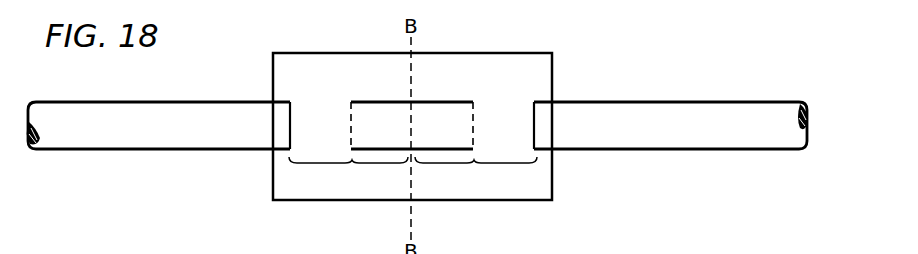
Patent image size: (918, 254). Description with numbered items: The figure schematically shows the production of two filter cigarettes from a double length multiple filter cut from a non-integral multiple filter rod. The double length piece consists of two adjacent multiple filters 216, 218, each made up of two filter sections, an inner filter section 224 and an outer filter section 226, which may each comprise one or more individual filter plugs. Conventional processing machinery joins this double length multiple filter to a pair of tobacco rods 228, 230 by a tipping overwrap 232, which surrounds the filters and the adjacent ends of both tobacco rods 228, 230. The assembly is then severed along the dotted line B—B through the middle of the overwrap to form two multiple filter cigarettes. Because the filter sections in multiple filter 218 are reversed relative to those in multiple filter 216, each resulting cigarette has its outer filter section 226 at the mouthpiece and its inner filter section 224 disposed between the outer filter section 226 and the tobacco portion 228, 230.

The multiple filter 216 is at (352, 163).
The multiple filter 218 is at (474, 163).
The inner filter section 224 is at (318, 110).
The outer filter section 226 is at (378, 110).
The tobacco rod 228 is at (153, 110).
The tobacco rod 230 is at (702, 108).
The tipping overwrap 232 is at (488, 56).